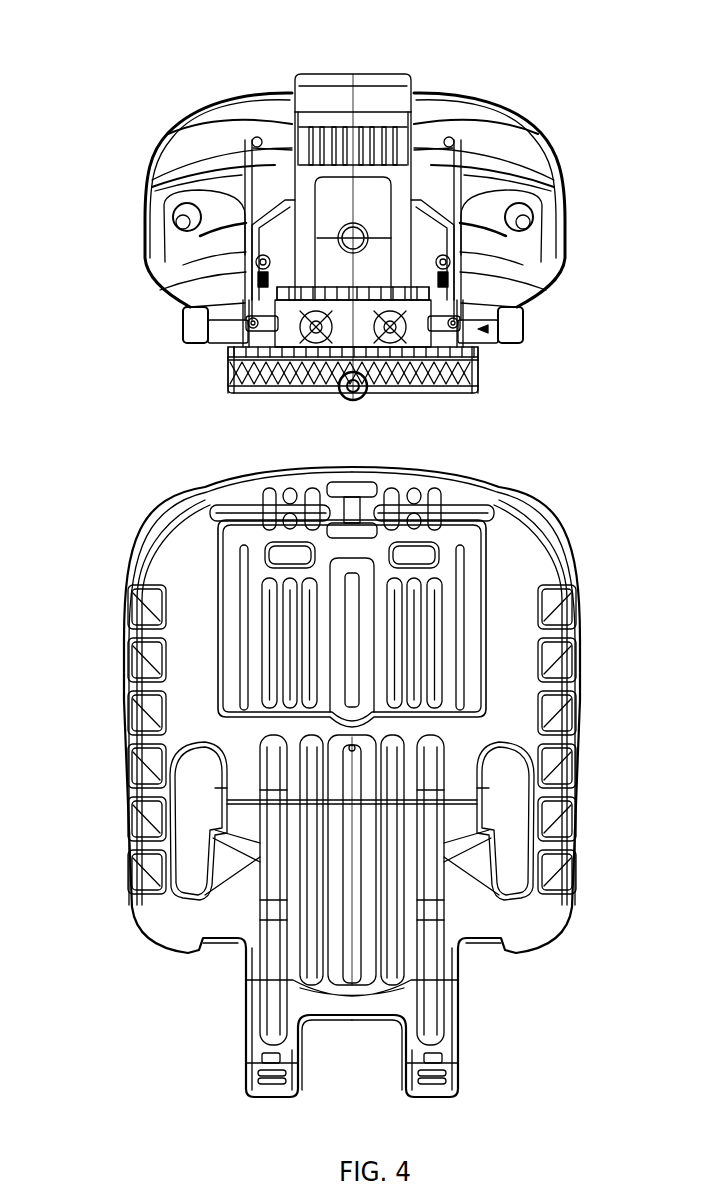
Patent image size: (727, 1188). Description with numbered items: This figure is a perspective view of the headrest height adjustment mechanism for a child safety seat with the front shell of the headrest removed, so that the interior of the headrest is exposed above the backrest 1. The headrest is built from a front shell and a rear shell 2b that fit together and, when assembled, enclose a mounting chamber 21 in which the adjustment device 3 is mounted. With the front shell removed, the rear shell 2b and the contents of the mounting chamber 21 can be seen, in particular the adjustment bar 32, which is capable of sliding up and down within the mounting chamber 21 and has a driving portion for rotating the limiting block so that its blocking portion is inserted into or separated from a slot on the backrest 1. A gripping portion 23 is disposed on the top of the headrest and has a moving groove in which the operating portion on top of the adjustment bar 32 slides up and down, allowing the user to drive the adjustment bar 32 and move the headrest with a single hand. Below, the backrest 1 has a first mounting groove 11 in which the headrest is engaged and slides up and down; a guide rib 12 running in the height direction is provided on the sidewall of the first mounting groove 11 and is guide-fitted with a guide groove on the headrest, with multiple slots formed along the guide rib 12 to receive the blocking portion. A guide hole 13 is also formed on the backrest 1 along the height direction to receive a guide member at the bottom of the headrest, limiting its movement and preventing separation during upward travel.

The backrest 1 is at (148, 922).
The rear shell 2b is at (162, 158).
The adjustment device 3 is at (523, 340).
The first mounting groove 11 is at (287, 509).
The guide rib 12 is at (227, 561).
The guide hole 13 is at (352, 593).
The mounting chamber 21 is at (427, 220).
The gripping portion 23 is at (342, 77).
The adjustment bar 32 is at (440, 243).